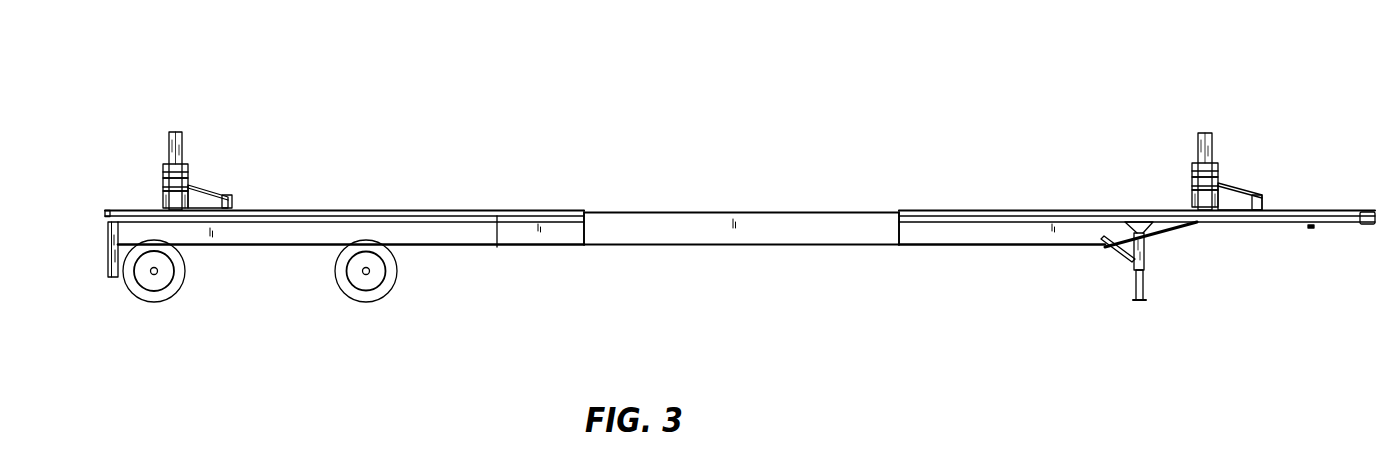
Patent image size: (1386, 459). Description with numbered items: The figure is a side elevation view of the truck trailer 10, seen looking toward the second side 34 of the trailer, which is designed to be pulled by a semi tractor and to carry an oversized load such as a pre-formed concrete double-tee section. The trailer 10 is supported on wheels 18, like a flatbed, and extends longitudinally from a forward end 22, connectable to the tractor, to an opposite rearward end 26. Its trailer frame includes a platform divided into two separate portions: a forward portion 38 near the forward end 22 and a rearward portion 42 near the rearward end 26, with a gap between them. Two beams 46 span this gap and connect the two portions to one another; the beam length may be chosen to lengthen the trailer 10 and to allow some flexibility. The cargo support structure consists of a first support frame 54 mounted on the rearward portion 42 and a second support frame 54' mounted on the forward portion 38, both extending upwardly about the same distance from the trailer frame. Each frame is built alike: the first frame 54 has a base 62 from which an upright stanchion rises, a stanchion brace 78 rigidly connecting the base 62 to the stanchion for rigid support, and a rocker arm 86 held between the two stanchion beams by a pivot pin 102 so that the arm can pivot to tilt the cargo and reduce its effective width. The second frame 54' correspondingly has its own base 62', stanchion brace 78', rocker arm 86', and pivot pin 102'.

The truck trailer 10 is at (602, 174).
The wheels 18 is at (172, 298).
The forward end 22 is at (1368, 227).
The rearward end 26 is at (107, 217).
The second side 34 is at (497, 246).
The forward portion 38 is at (947, 210).
The rearward portion 42 is at (340, 209).
The beams 46 is at (705, 247).
The first support frame 54 is at (194, 124).
The base 62 is at (153, 177).
The stanchion brace 78 is at (230, 179).
The rocker arm 86 is at (196, 149).
The pivot pin 102 is at (151, 128).
The second support frame 54' is at (1200, 120).
The base 62' is at (1165, 191).
The stanchion brace 78' is at (1252, 179).
The rocker arm 86' is at (1168, 162).
The pivot pin 102' is at (1223, 137).